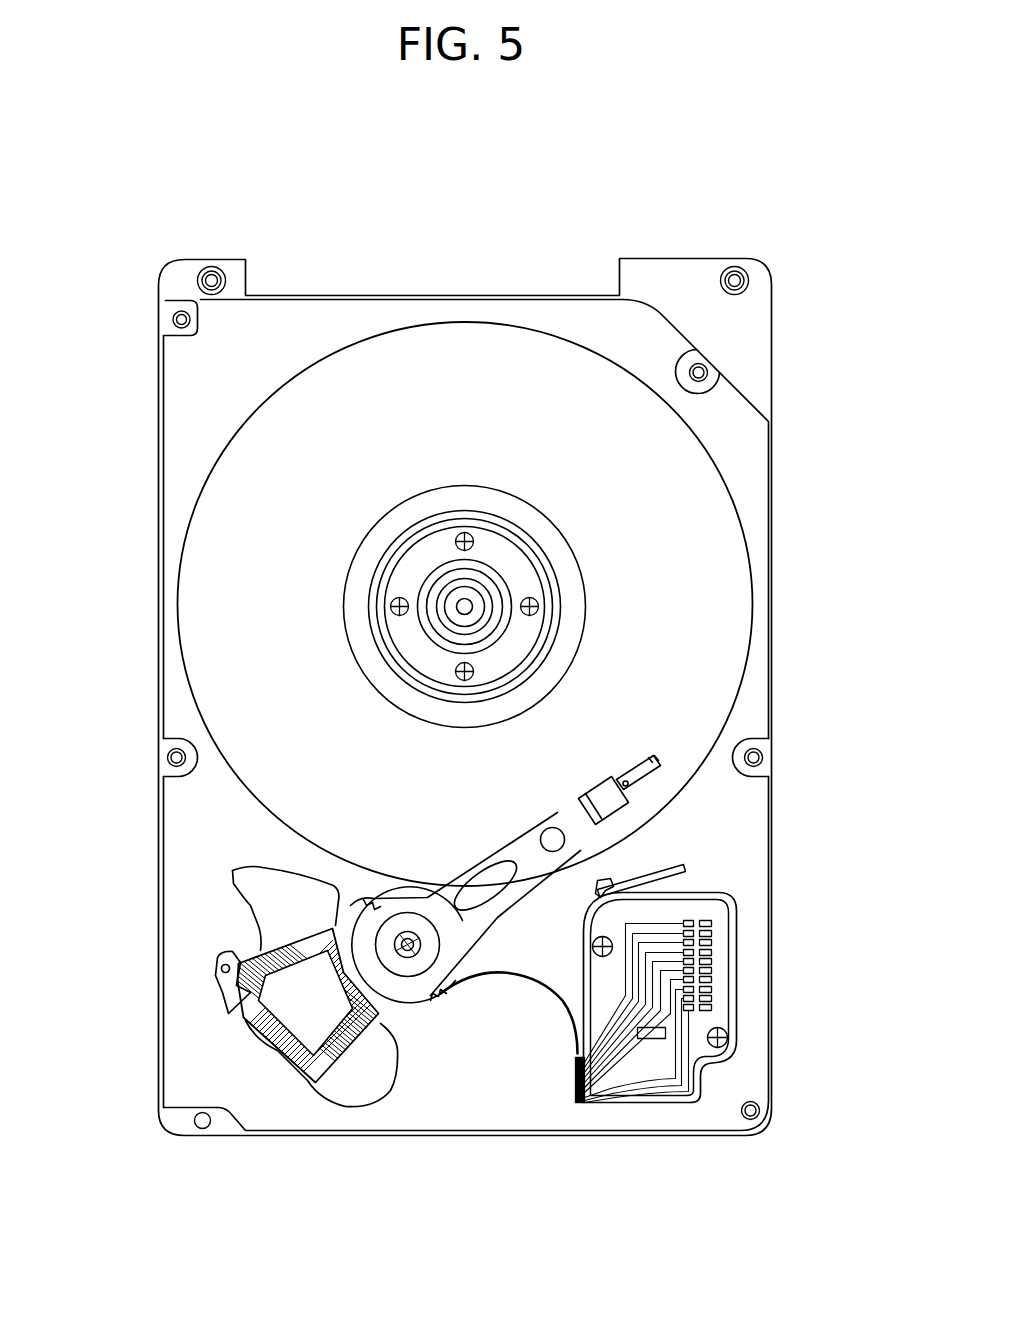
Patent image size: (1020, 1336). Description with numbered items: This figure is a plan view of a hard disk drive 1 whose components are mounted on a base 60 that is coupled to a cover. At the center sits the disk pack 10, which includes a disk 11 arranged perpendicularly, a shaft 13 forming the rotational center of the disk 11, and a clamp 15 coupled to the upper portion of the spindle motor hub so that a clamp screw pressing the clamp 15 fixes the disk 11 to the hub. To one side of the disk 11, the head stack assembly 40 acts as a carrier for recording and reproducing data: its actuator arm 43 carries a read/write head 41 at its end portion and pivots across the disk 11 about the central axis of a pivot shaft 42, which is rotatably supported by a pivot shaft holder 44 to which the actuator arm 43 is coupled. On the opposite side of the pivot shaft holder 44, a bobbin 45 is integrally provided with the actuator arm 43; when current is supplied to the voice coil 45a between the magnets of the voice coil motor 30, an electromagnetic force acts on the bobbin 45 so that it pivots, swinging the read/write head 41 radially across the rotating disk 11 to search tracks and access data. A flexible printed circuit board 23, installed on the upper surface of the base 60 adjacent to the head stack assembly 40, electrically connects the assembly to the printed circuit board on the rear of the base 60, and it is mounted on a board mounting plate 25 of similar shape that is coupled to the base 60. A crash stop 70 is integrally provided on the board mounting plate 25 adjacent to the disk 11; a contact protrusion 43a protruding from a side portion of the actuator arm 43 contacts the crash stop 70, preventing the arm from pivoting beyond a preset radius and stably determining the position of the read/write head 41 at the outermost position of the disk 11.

The hard disk drive 1 is at (120, 225).
The disk pack 10 is at (642, 530).
The disk 11 is at (655, 700).
The shaft 13 is at (468, 605).
The clamp 15 is at (534, 611).
The flexible printed circuit board 23 is at (632, 1103).
The board mounting plate 25 is at (680, 1103).
The voice coil motor 30 is at (226, 861).
The head stack assembly 40 is at (198, 987).
The read/write head 41 is at (661, 760).
The pivot shaft 42 is at (412, 950).
The actuator arm 43 is at (592, 817).
The contact protrusion 43a is at (580, 845).
The pivot shaft holder 44 is at (405, 990).
The bobbin 45 is at (317, 1082).
The voice coil 45a is at (292, 1078).
The base 60 is at (791, 1031).
The crash stop 70 is at (702, 873).